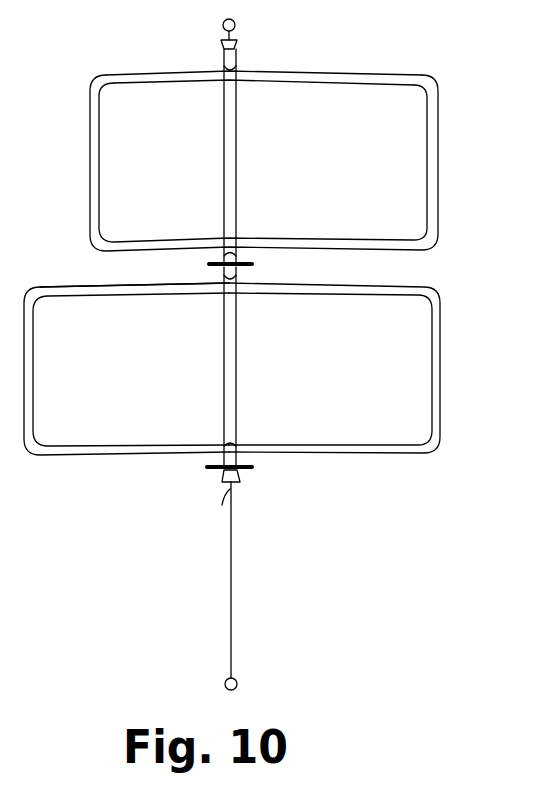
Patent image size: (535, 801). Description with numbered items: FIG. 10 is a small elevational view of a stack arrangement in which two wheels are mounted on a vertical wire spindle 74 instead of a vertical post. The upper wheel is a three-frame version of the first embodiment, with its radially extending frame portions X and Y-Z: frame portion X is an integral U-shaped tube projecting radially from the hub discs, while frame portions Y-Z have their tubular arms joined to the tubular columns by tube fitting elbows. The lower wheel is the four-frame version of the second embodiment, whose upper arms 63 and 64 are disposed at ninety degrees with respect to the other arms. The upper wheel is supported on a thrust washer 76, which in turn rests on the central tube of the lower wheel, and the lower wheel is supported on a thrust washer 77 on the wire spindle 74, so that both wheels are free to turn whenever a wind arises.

The radially extending frame portion X is at (282, 138).
The radially extending frame portions Y-Z is at (156, 69).
The upper arm 63 is at (254, 344).
The upper arm 64 is at (70, 287).
The thrust washer 76 is at (247, 266).
The thrust washer 77 is at (246, 470).
The vertical wire spindle 74 is at (231, 637).